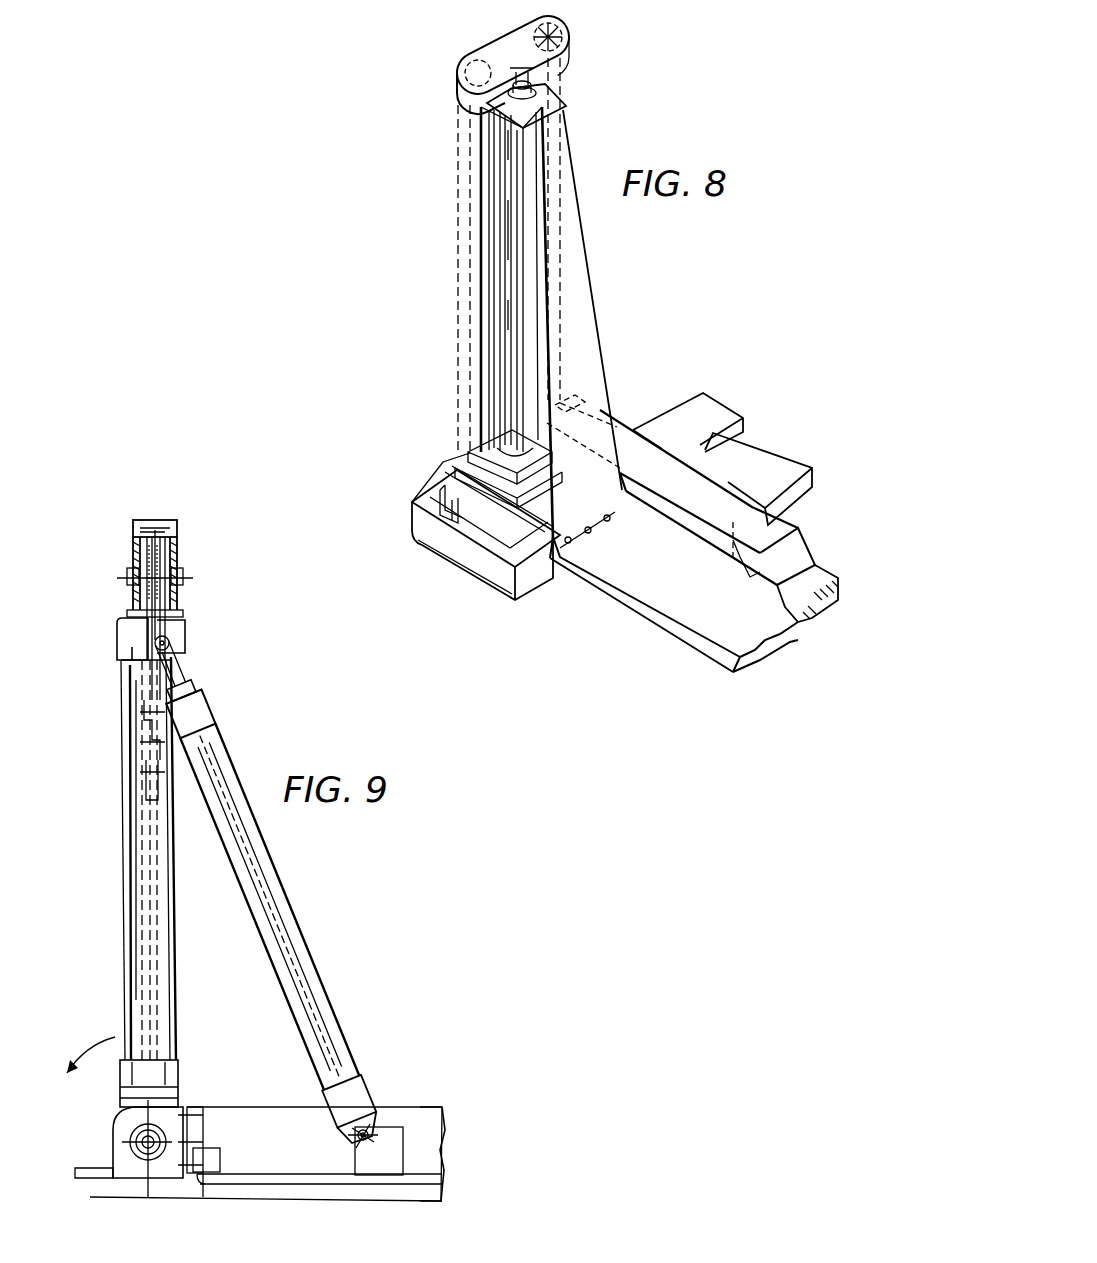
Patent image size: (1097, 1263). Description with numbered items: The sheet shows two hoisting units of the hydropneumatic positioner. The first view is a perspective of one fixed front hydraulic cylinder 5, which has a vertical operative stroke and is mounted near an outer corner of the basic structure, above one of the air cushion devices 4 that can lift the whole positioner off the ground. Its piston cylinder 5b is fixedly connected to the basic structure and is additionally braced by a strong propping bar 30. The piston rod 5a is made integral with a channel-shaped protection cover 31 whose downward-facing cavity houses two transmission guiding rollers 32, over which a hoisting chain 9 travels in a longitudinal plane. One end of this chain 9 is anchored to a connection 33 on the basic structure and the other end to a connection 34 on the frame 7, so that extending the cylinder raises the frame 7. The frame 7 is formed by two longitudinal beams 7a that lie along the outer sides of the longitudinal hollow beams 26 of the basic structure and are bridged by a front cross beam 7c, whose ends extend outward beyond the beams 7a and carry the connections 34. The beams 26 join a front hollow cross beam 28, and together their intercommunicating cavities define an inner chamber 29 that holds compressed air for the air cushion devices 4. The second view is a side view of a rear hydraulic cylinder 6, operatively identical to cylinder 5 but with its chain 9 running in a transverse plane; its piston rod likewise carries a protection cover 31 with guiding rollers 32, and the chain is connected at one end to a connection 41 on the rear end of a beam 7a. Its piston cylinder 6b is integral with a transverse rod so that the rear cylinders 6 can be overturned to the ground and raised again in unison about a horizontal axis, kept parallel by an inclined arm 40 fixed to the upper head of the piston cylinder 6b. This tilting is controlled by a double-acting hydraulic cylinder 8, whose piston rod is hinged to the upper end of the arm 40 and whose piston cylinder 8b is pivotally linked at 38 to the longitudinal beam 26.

In FIG. 8, the protection cover 31 is at (488, 42).
In FIG. 9, the protection cover 31 is at (163, 523).
In FIG. 8, the transmission guiding rollers 32 is at (548, 81).
In FIG. 9, the transmission guiding rollers 32 is at (170, 598).
In FIG. 8, the piston rod 5a is at (540, 113).
In FIG. 8, the hydraulic cylinder 5 is at (487, 323).
In FIG. 8, the piston cylinder 5b is at (508, 283).
In FIG. 8, the hoisting chain 9 is at (462, 317).
In FIG. 9, the hoisting chain 9 is at (145, 723).
In FIG. 8, the propping bar 30 is at (573, 273).
In FIG. 8, the connection 34 is at (563, 400).
In FIG. 8, the front cross beam 7c is at (628, 447).
In FIG. 8, the longitudinal beam 7a is at (685, 415).
In FIG. 8, the longitudinal hollow beam 26 is at (755, 463).
In FIG. 9, the longitudinal hollow beam 26 is at (423, 1120).
In FIG. 8, the frame 7 is at (694, 530).
In FIG. 8, the connection 33 is at (452, 515).
In FIG. 8, the air cushion device 4 is at (483, 567).
In FIG. 9, the air cushion device 4 is at (268, 1193).
In FIG. 8, the front hollow cross beam 28 is at (640, 580).
In FIG. 8, the inner chamber 29 is at (765, 647).
In FIG. 9, the inclined arm 40 is at (132, 638).
In FIG. 9, the hydraulic cylinder 6 is at (127, 858).
In FIG. 9, the piston cylinder 6b is at (148, 898).
In FIG. 9, the hydraulic cylinder 8 is at (265, 889).
In FIG. 9, the piston cylinder 8b is at (275, 908).
In FIG. 9, the connection 41 is at (128, 1137).
In FIG. 9, the pivot link 38 is at (367, 1130).